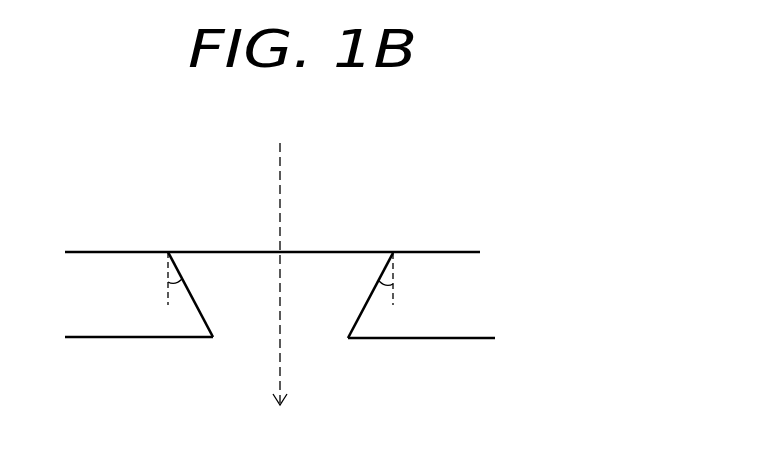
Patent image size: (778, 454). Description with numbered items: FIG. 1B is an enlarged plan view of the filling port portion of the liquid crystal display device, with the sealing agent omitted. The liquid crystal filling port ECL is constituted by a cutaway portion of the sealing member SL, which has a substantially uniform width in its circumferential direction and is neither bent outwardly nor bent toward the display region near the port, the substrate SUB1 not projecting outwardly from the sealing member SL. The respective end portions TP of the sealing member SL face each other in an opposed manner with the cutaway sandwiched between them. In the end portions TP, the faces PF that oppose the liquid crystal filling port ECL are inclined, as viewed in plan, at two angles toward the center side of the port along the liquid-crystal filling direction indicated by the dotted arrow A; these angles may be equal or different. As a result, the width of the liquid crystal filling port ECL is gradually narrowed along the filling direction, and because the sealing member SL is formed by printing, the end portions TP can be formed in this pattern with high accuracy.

The sealing member SL is at (100, 268).
The faces PF is at (193, 295).
The liquid crystal filling port ECL is at (250, 272).
The substrate SUB1 is at (320, 252).
The end portions TP is at (200, 338).
The dotted arrow A is at (281, 293).